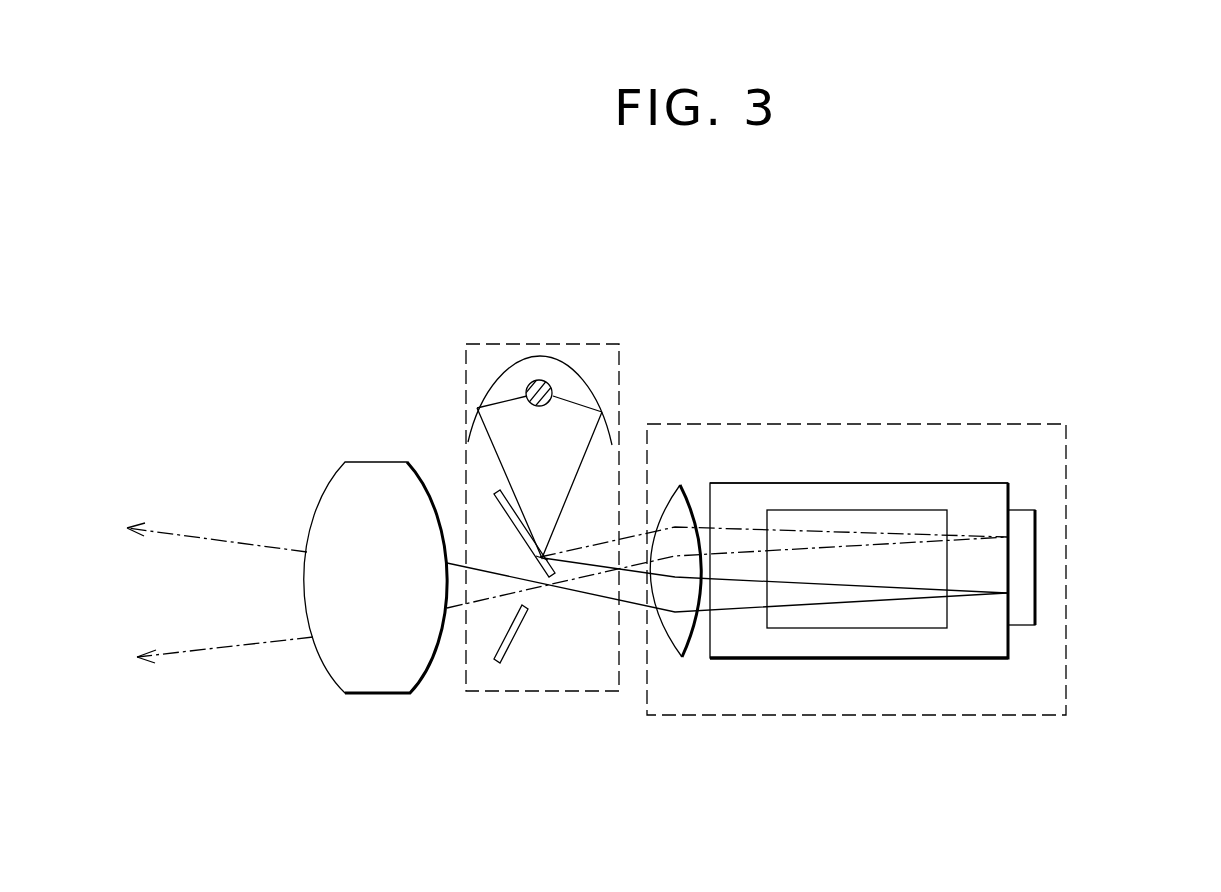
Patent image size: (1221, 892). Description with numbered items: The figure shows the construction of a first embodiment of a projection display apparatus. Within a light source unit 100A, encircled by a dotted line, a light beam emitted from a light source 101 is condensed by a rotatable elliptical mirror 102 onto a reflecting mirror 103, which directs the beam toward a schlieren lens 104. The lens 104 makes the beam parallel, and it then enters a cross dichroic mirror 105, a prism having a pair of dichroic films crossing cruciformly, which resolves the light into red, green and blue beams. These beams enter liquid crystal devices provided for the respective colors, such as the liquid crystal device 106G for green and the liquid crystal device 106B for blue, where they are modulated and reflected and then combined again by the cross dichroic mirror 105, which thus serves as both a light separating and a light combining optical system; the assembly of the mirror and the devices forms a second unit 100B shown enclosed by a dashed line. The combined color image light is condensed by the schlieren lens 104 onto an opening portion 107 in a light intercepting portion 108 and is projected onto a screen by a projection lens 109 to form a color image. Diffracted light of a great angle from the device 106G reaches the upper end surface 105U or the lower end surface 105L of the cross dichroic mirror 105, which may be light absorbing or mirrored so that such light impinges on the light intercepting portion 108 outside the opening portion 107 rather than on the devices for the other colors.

The light source unit 100A is at (481, 343).
The light receiving optical unit 100B is at (1184, 422).
The light source 101 is at (525, 393).
The rotatable elliptical mirror 102 is at (562, 360).
The reflecting mirror 103 is at (540, 557).
The schlieren lens 104 is at (680, 485).
The cross dichroic mirror 105 is at (858, 484).
The upper end surface 105U is at (978, 483).
The lower end surface 105L is at (987, 659).
The liquid crystal device 106B is at (902, 629).
The liquid crystal device 106G is at (1036, 557).
The opening portion 107 is at (530, 598).
The light intercepting portion 108 is at (499, 663).
The projection lens 109 is at (370, 694).